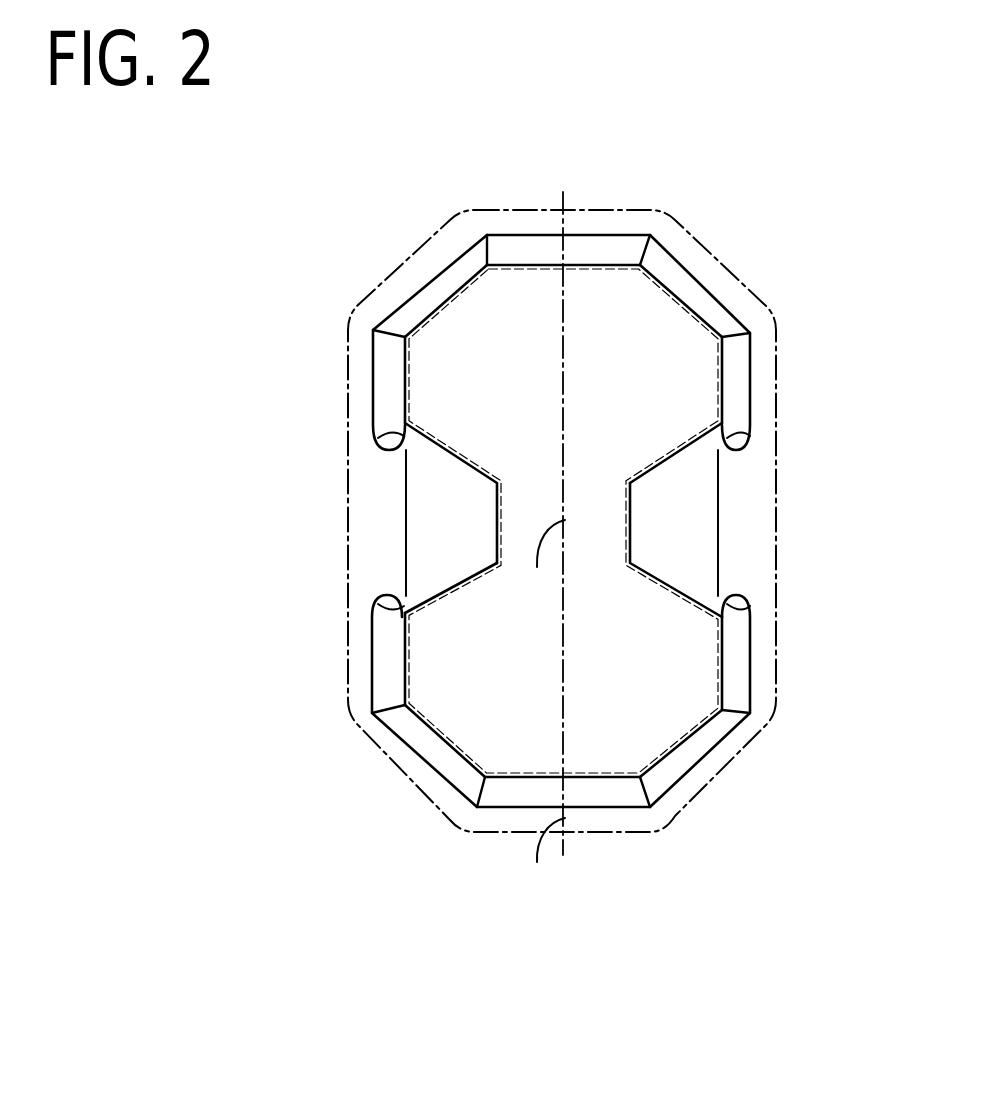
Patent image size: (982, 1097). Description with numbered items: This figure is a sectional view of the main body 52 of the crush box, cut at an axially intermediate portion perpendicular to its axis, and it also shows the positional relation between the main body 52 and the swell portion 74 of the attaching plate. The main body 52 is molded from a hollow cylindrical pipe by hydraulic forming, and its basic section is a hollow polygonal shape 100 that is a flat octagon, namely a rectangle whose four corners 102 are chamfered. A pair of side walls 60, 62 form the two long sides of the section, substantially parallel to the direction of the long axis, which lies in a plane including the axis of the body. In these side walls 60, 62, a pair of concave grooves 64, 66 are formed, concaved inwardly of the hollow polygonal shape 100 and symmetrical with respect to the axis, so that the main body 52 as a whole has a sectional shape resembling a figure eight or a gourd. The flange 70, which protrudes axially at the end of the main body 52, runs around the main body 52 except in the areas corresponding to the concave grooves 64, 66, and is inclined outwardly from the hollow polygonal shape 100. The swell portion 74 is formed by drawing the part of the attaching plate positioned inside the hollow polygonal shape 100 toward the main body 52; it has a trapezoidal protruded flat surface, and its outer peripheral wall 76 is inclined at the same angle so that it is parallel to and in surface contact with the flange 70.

The main body 52 is at (714, 255).
The side wall 60 is at (393, 662).
The side wall 62 is at (722, 373).
The concave groove 64 is at (450, 463).
The concave groove 66 is at (667, 573).
The flange 70 is at (573, 248).
The swell portion 74 is at (447, 542).
The outer peripheral wall 76 is at (358, 402).
The hollow polygonal shape 100 is at (694, 485).
The corner 102 is at (437, 302).